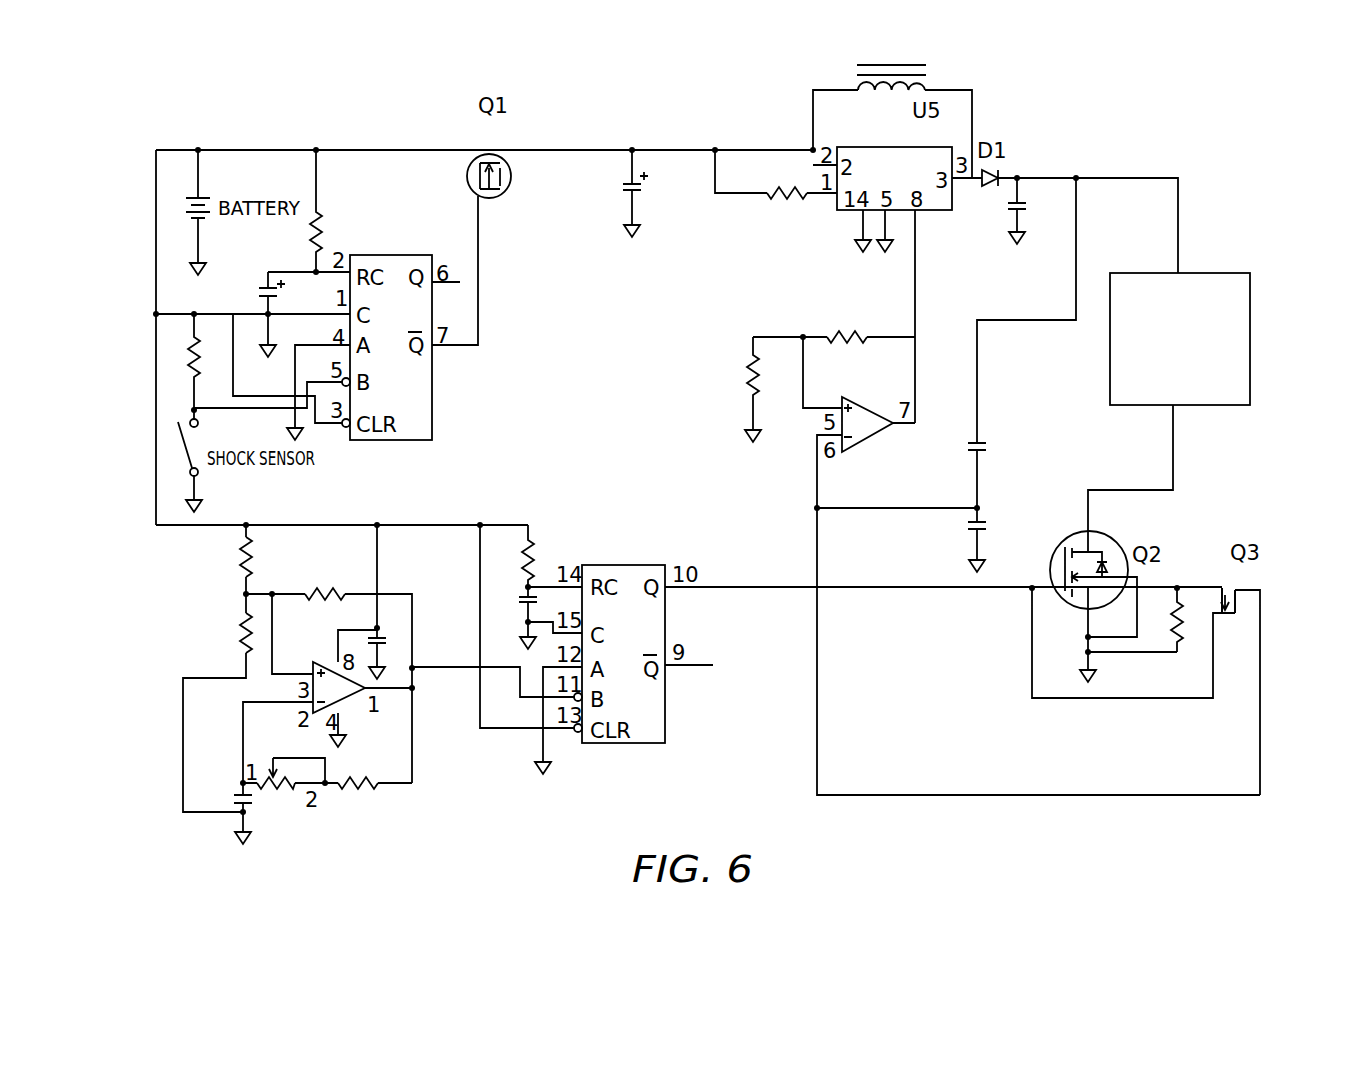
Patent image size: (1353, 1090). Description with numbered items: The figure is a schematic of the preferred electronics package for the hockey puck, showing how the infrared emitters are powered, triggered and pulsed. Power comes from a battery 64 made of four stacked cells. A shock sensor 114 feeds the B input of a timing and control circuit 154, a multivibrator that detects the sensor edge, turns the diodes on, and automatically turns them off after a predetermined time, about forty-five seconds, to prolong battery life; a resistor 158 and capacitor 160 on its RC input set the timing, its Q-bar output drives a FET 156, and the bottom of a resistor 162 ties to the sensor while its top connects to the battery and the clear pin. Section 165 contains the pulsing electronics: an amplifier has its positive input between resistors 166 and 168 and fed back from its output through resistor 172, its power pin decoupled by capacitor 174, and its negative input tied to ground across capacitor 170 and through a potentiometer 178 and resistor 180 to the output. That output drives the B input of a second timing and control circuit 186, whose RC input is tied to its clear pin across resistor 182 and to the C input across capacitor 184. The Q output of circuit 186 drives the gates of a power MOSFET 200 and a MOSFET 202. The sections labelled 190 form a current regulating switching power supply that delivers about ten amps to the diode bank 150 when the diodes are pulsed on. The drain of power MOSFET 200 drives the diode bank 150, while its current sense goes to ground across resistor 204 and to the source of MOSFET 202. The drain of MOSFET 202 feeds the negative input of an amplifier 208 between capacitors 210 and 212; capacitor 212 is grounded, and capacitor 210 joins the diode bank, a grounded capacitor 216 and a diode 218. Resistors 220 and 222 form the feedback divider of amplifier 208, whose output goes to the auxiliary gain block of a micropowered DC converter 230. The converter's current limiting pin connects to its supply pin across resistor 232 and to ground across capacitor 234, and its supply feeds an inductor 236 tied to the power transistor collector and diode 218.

The battery 64 is at (200, 220).
The shock sensor 114 is at (190, 470).
The diode bank 150 is at (1228, 272).
The timing and control circuit 154 is at (432, 383).
The FET 156 is at (498, 197).
The resistor 158 is at (320, 212).
The capacitor 160 is at (262, 283).
The resistor 162 is at (193, 365).
The section 165 is at (133, 828).
The resistor 166 is at (243, 560).
The resistor 168 is at (243, 638).
The capacitor 170 is at (248, 805).
The resistor 172 is at (320, 590).
The capacitor 174 is at (382, 634).
The potentiometer 178 is at (272, 787).
The resistor 180 is at (358, 788).
The resistor 182 is at (530, 543).
The capacitor 184 is at (520, 598).
The timing and control circuit 186 is at (667, 628).
The current regulating switching power supply section 190 is at (1160, 114).
The power MOSFET 200 is at (1072, 538).
The MOSFET 202 is at (1238, 595).
The resistor 204 is at (1173, 641).
The amplifier 208 is at (867, 437).
The capacitor 210 is at (984, 439).
The capacitor 212 is at (972, 530).
The capacitor 216 is at (1027, 204).
The diode 218 is at (992, 184).
The resistor 220 is at (848, 330).
The resistor 222 is at (752, 380).
The converter 230 is at (883, 146).
The resistor 232 is at (782, 190).
The capacitor 234 is at (640, 187).
The inductor 236 is at (885, 64).